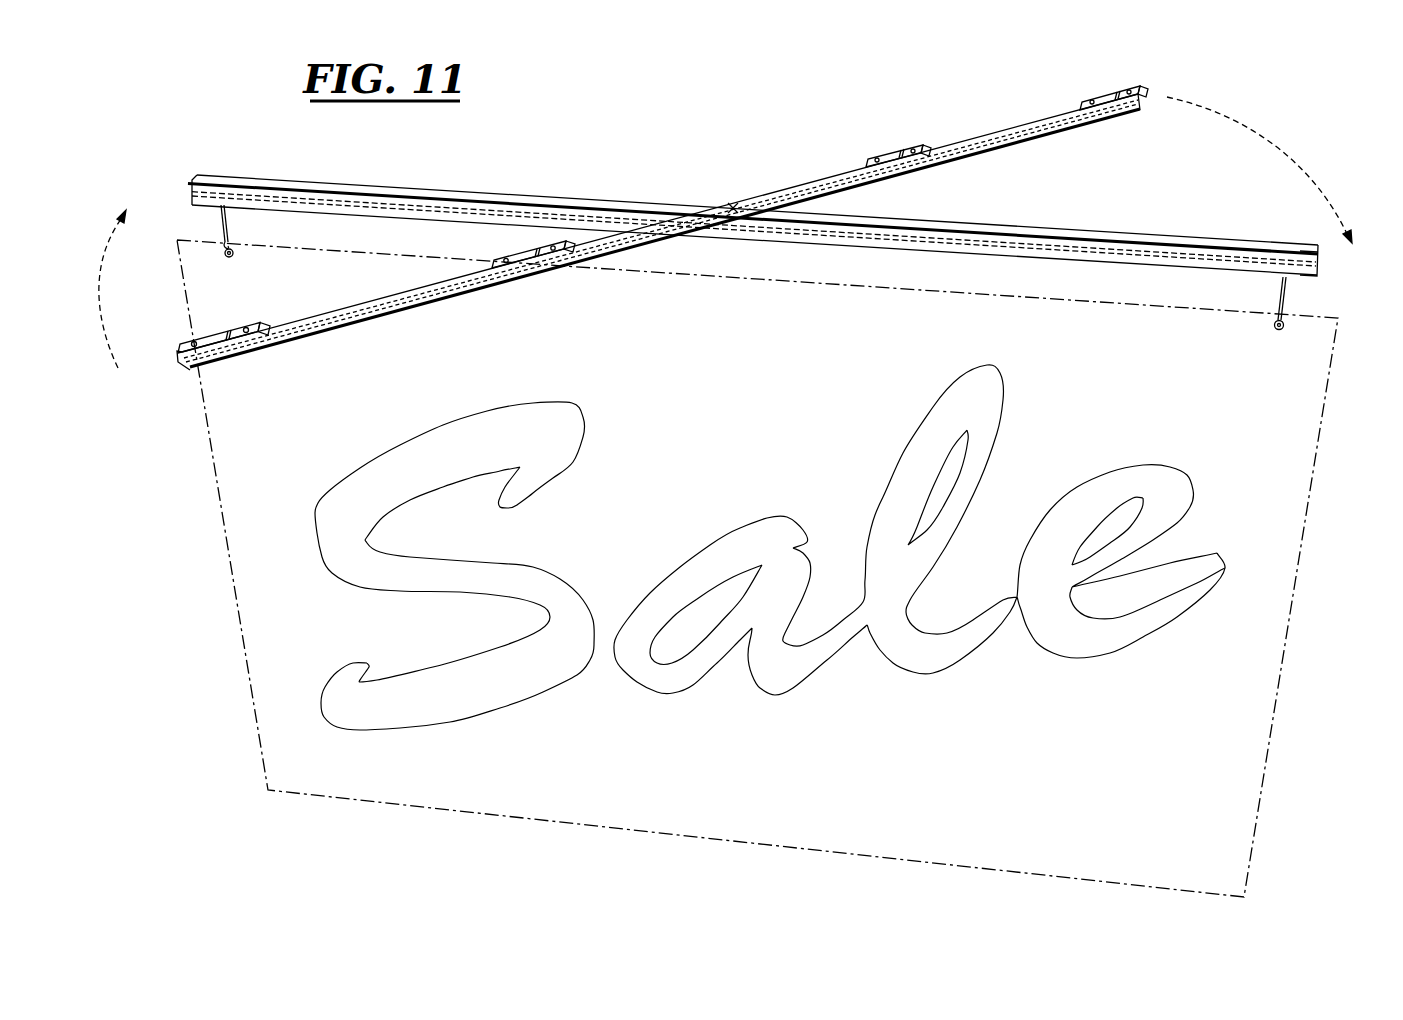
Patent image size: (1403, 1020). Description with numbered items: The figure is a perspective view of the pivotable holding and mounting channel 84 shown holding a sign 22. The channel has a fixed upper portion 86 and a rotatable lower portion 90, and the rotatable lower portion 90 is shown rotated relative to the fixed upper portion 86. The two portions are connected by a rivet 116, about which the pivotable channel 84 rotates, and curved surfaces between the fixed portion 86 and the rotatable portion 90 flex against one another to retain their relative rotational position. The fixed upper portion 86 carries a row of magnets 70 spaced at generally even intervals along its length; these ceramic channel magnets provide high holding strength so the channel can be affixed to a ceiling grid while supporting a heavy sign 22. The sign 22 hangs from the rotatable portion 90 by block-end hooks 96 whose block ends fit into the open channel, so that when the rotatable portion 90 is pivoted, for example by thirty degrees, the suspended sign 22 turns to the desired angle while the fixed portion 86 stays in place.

The sign 22 is at (1298, 490).
The magnet 70 is at (1103, 92).
The pivotable holding and mounting channel 84 is at (1322, 268).
The fixed upper portion 86 is at (965, 133).
The rotatable lower portion 90 is at (300, 184).
The block-end hook 96 is at (218, 217).
The rivet 116 is at (740, 216).